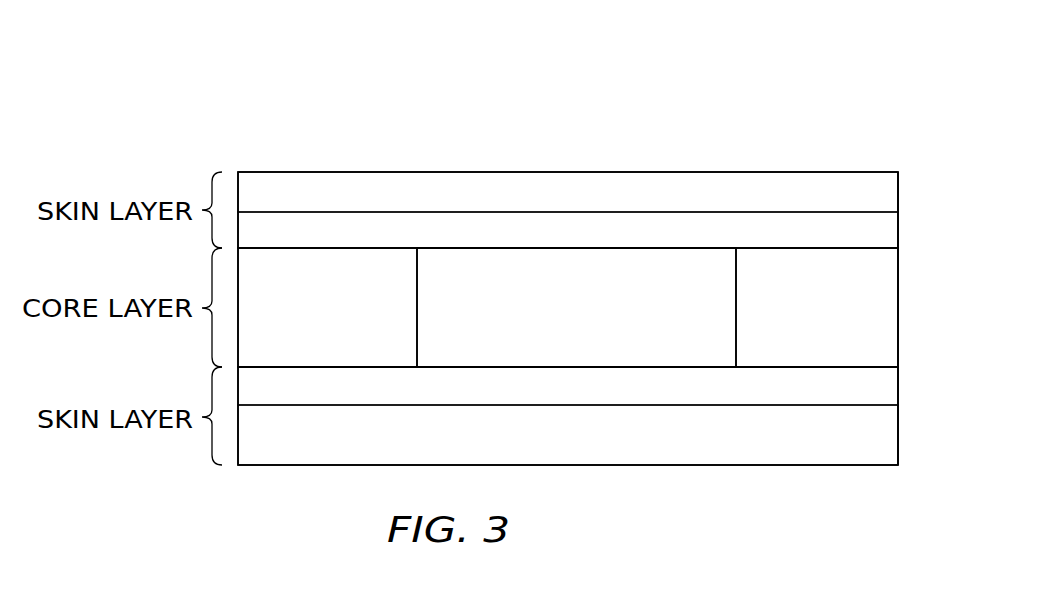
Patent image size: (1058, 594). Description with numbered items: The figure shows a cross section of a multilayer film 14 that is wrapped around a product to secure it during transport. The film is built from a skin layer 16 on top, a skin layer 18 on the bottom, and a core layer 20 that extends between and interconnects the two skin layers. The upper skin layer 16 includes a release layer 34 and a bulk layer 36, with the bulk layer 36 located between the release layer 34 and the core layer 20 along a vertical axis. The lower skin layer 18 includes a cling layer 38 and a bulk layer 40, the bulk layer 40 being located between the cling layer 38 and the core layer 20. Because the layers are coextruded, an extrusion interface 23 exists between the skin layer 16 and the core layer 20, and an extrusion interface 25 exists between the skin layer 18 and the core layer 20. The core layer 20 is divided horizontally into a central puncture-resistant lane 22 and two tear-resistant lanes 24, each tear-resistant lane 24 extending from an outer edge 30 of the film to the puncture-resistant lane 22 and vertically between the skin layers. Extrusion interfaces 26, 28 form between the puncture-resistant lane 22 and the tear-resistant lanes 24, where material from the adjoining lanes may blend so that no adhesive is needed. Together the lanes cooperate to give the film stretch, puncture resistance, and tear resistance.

The multilayer film 14 is at (166, 110).
The skin layer 16 is at (98, 190).
The skin layer 18 is at (98, 395).
The core layer 20 is at (98, 290).
The puncture-resistant lane 22 is at (448, 263).
The extrusion interface 23 is at (464, 251).
The tear-resistant lane 24 is at (300, 253).
The extrusion interface 25 is at (385, 364).
The extrusion interface 26 is at (415, 270).
The extrusion interface 28 is at (738, 261).
The outer edge 30 is at (902, 256).
The release layer 34 is at (728, 192).
The bulk layer 36 is at (862, 228).
The cling layer 38 is at (820, 438).
The bulk layer 40 is at (892, 385).